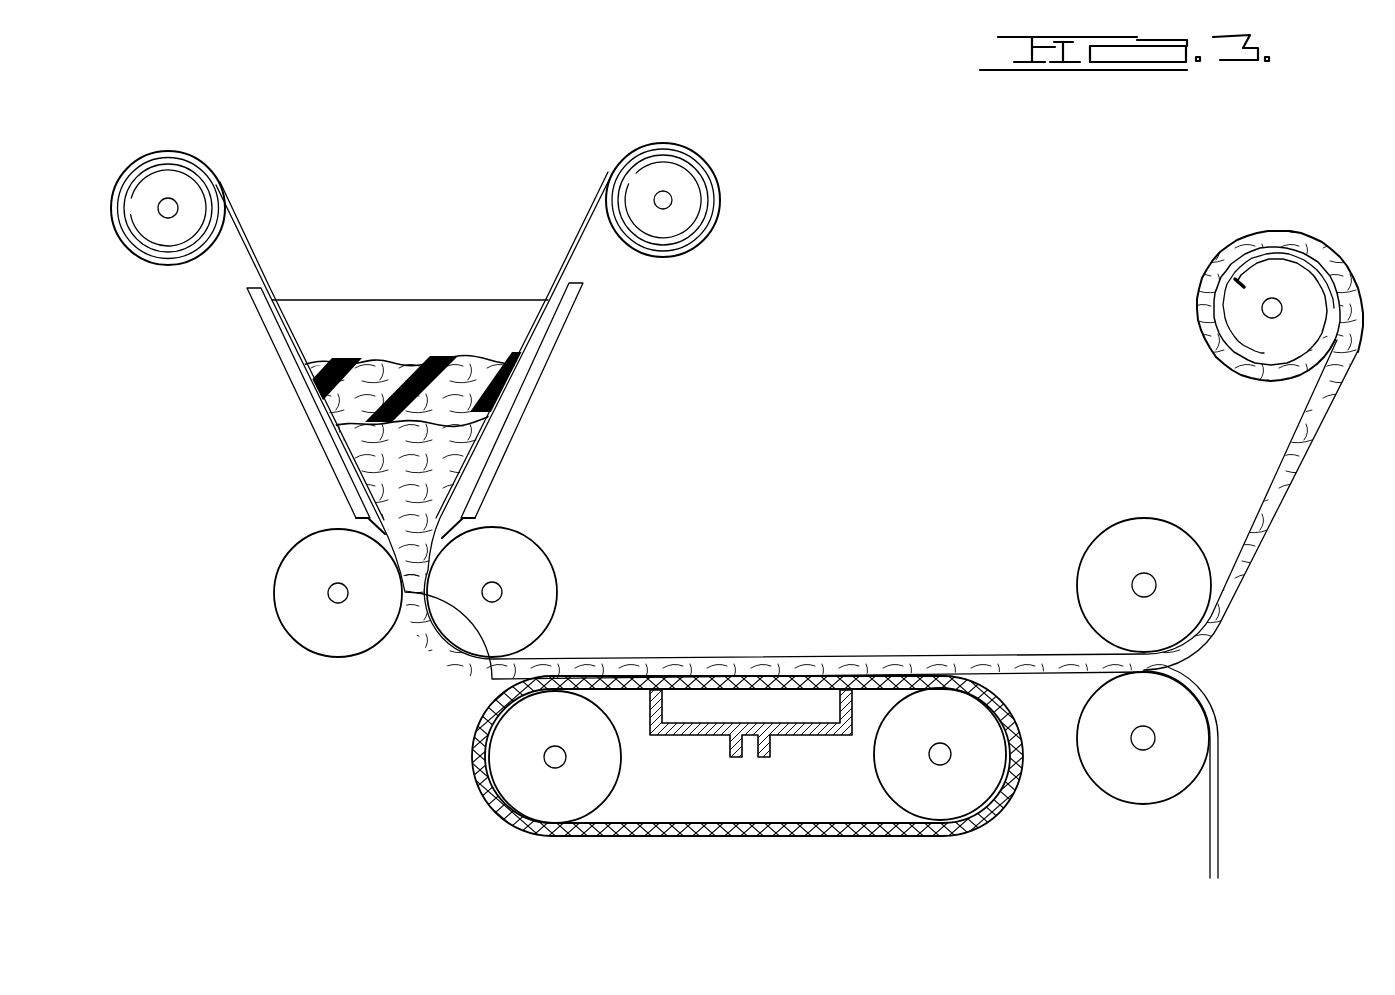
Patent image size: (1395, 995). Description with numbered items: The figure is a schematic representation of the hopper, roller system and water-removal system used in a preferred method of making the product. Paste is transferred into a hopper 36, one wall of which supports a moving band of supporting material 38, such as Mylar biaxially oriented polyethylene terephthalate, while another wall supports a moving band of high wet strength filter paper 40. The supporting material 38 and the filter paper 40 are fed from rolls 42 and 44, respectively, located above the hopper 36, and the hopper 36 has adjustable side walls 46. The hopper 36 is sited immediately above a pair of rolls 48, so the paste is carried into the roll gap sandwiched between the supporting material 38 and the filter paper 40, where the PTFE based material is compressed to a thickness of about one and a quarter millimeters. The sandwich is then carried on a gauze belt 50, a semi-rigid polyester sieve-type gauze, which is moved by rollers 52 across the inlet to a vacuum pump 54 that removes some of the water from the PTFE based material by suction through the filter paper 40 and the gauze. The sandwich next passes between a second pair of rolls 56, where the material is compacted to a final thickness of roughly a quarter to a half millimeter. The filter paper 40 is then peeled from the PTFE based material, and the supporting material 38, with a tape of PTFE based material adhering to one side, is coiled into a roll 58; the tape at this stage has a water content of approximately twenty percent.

The hopper 36 is at (272, 342).
The supporting material 38 is at (578, 242).
The filter paper 40 is at (277, 296).
The roll 42 is at (688, 151).
The roll 44 is at (172, 151).
The adjustable side walls 46 is at (388, 312).
The pair of rolls 48 is at (274, 580).
The gauze belt 50 is at (620, 837).
The rollers 52 is at (620, 777).
The vacuum pump 54 is at (748, 758).
The second pair of rolls 56 is at (1098, 538).
The roll 58 is at (1298, 234).